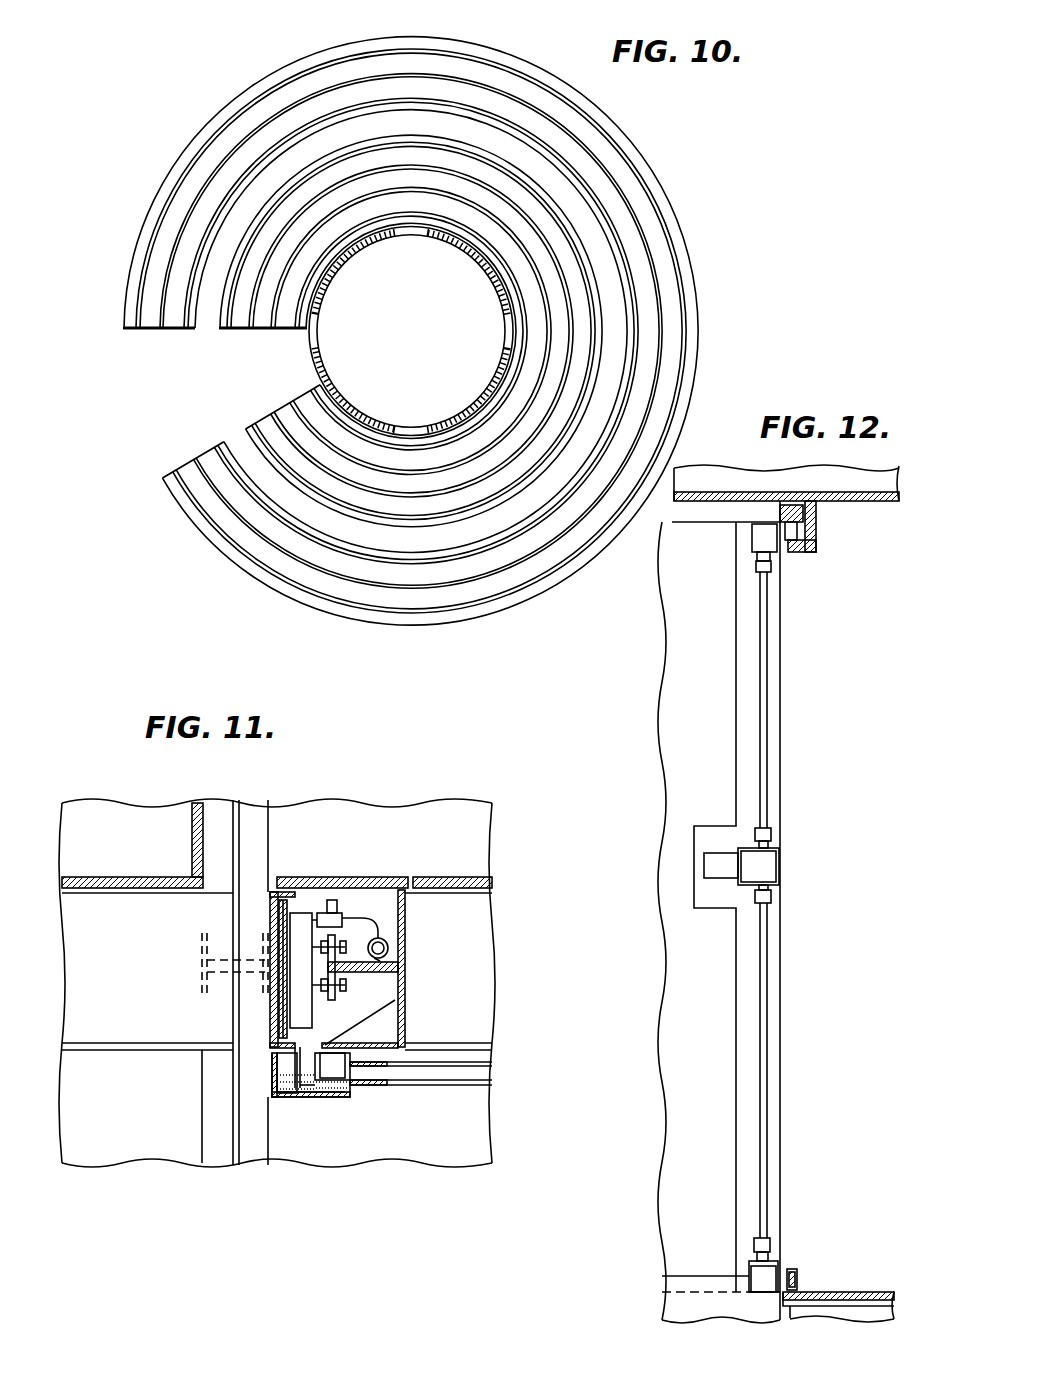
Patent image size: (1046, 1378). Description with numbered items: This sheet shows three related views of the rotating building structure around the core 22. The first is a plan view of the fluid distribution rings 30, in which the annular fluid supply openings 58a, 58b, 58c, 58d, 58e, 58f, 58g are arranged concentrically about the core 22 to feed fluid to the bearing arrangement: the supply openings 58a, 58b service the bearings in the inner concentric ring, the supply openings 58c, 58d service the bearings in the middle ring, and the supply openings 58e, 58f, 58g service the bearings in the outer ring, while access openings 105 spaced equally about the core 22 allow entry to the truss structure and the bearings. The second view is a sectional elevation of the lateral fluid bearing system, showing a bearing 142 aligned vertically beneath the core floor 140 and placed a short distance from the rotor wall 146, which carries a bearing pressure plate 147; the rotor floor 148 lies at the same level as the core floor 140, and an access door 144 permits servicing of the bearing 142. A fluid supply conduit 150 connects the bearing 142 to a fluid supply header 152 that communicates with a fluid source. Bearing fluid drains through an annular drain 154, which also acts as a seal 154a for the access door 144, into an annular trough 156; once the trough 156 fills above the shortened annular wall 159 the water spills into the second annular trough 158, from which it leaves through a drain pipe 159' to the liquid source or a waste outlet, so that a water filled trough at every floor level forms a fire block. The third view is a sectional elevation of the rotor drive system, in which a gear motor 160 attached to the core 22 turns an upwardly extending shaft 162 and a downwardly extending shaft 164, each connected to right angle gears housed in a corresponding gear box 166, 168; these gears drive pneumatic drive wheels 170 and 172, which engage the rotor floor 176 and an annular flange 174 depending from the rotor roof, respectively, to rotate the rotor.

In FIG. 10, the core 22 is at (494, 283).
In FIG. 11, the core 22 is at (452, 818).
In FIG. 12, the core 22 is at (680, 703).
In FIG. 10, the coil assembly 30 is at (645, 161).
In FIG. 10, the annular fluid supply opening 58a is at (305, 330).
In FIG. 10, the annular fluid supply opening 58b is at (297, 378).
In FIG. 10, the annular fluid supply opening 58c is at (252, 330).
In FIG. 10, the annular fluid supply opening 58d is at (264, 420).
In FIG. 10, the annular fluid supply opening 58e is at (175, 330).
In FIG. 10, the annular fluid supply opening 58f is at (200, 454).
In FIG. 10, the annular fluid supply opening 58g is at (180, 468).
In FIG. 10, the access opening 105 is at (398, 238).
In FIG. 11, the core floor 140 is at (458, 882).
In FIG. 11, the bearing 142 is at (276, 1003).
In FIG. 11, the access door 144 is at (338, 877).
In FIG. 11, the rotor wall 146 is at (260, 820).
In FIG. 11, the bearing pressure plate 147 is at (290, 917).
In FIG. 11, the rotor floor 148 is at (137, 877).
In FIG. 11, the fluid supply conduit 150 is at (377, 917).
In FIG. 11, the fluid supply header 152 is at (392, 955).
In FIG. 11, the annular drain 154 is at (270, 1047).
In FIG. 11, the seal 154a is at (288, 872).
In FIG. 11, the annular trough 156 is at (285, 1080).
In FIG. 11, the second annular trough 158 is at (338, 1097).
In FIG. 11, the shortened annular wall 159 is at (298, 1117).
In FIG. 11, the drain pipe 159' is at (421, 1103).
In FIG. 12, the gear motor 160 is at (765, 865).
In FIG. 12, the upwardly extending shaft 162 is at (766, 680).
In FIG. 12, the downwardly extending shaft 164 is at (765, 1036).
In FIG. 12, the gear box 166 is at (759, 543).
In FIG. 12, the gear box 168 is at (749, 1274).
In FIG. 12, the pneumatic drive wheel 170 is at (795, 1269).
In FIG. 12, the pneumatic drive wheel 172 is at (793, 552).
In FIG. 12, the annular flange 174 is at (817, 538).
In FIG. 12, the rotor floor 176 is at (825, 1292).